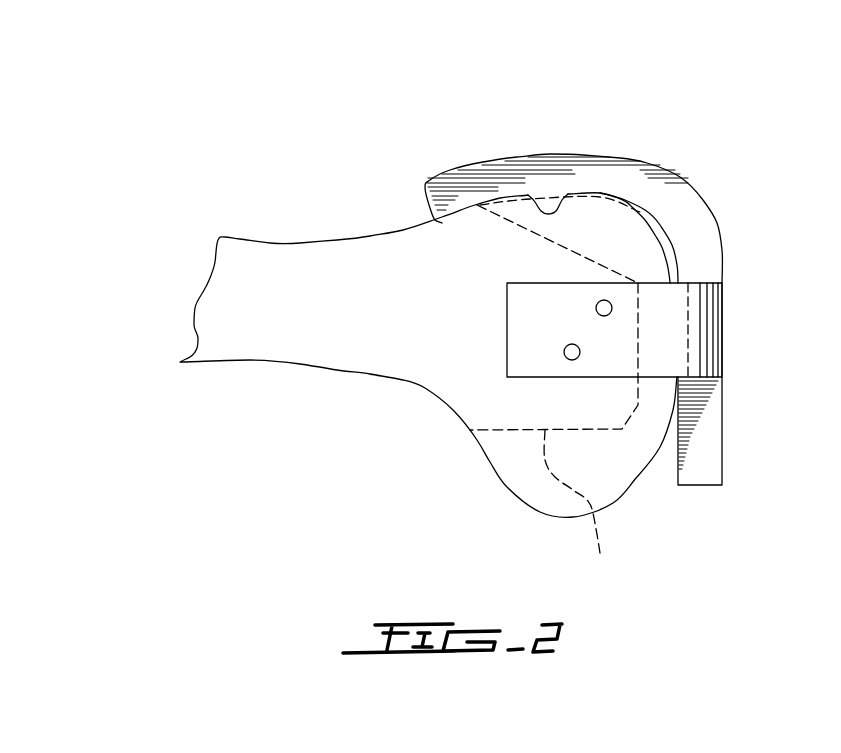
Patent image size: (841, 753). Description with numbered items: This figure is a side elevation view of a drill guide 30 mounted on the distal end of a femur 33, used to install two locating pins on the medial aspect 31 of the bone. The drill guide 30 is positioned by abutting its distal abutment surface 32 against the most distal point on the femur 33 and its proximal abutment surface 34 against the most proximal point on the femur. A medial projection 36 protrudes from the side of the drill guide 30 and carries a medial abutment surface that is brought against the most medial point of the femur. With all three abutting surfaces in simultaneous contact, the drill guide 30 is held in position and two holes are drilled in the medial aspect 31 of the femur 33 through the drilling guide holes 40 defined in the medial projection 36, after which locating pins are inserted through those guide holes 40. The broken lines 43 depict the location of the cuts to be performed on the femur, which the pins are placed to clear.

The drill guide 30 is at (672, 152).
The medial aspect 31 is at (547, 393).
The distal abutment surface 32 is at (678, 467).
The femur 33 is at (342, 270).
The proximal abutment surface 34 is at (563, 197).
The medial projection 36 is at (682, 313).
The drilling guide holes 40 is at (580, 352).
The broken lines 43 is at (580, 510).